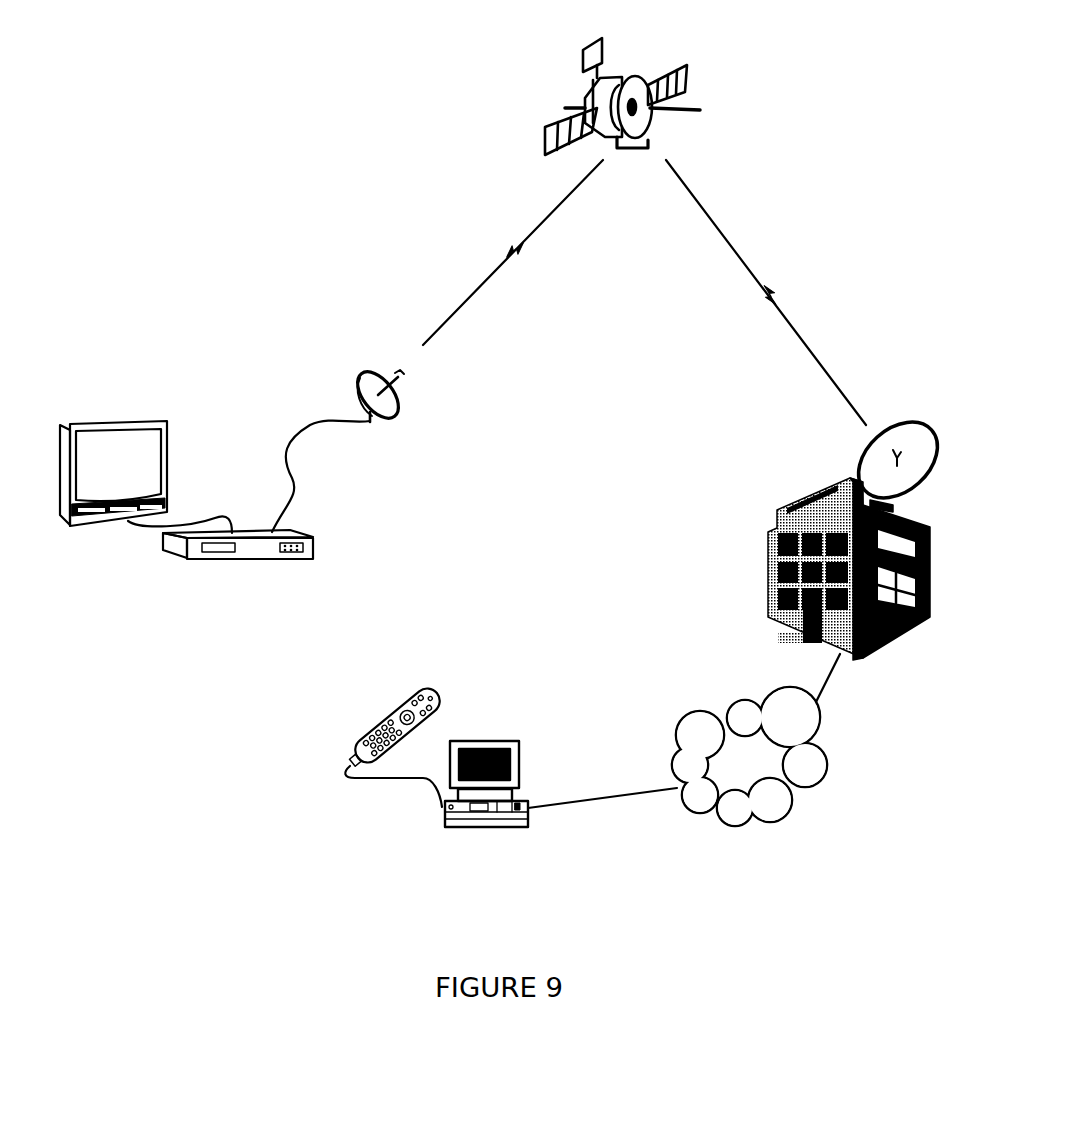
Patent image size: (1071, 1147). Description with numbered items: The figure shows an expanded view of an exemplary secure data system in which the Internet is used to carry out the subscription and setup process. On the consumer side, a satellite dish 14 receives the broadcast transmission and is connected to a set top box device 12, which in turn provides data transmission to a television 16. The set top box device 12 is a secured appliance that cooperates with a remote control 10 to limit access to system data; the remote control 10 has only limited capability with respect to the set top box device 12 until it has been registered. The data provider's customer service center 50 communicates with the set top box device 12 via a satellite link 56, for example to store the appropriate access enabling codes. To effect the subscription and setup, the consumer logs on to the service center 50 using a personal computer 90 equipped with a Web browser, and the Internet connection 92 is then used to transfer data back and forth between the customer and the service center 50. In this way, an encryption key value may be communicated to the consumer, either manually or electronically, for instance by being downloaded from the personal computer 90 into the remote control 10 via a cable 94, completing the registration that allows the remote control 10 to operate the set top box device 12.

The satellite link 56 is at (638, 75).
The television 16 is at (127, 423).
The set top box device 12 is at (313, 546).
The satellite dish 14 is at (405, 410).
The customer service center 50 is at (768, 562).
The Internet connection 92 is at (785, 820).
The personal computer 90 is at (493, 827).
The remote control 10 is at (397, 715).
The cable 94 is at (378, 787).